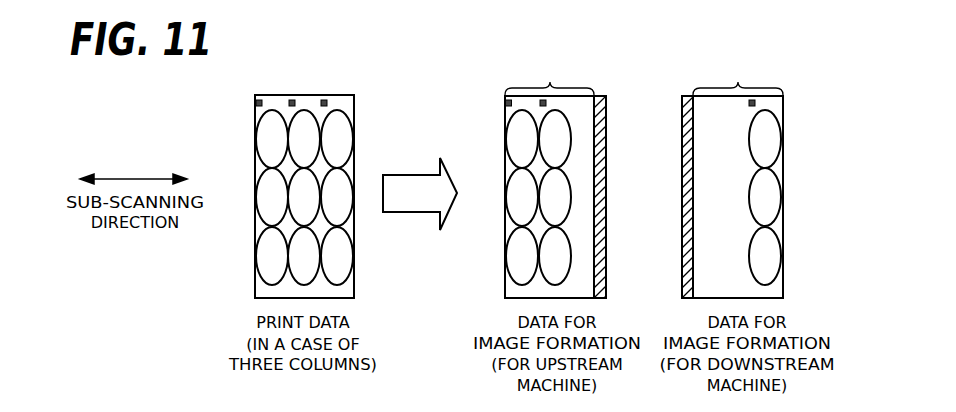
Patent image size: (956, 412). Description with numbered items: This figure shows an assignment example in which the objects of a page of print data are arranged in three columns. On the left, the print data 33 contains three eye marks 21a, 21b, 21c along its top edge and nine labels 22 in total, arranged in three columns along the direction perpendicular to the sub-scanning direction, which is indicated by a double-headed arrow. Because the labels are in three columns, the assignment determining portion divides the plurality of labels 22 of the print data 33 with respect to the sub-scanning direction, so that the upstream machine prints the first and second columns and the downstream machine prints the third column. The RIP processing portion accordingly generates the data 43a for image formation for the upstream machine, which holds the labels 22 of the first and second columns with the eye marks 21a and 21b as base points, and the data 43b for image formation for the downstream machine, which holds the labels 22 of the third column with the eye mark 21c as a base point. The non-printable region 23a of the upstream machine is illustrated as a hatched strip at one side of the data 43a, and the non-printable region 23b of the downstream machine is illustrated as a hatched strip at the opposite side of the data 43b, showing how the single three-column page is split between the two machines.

The eye mark 21a is at (257, 101).
The eye mark 21b is at (293, 100).
The eye mark 21c is at (324, 100).
The label 22 is at (258, 132).
The print data 33 is at (355, 96).
The non-printable region 23a is at (597, 95).
The non-printable region 23b is at (686, 95).
The data for image formation for the upstream machine 43a is at (549, 78).
The data for image formation for the downstream machine 43b is at (738, 78).